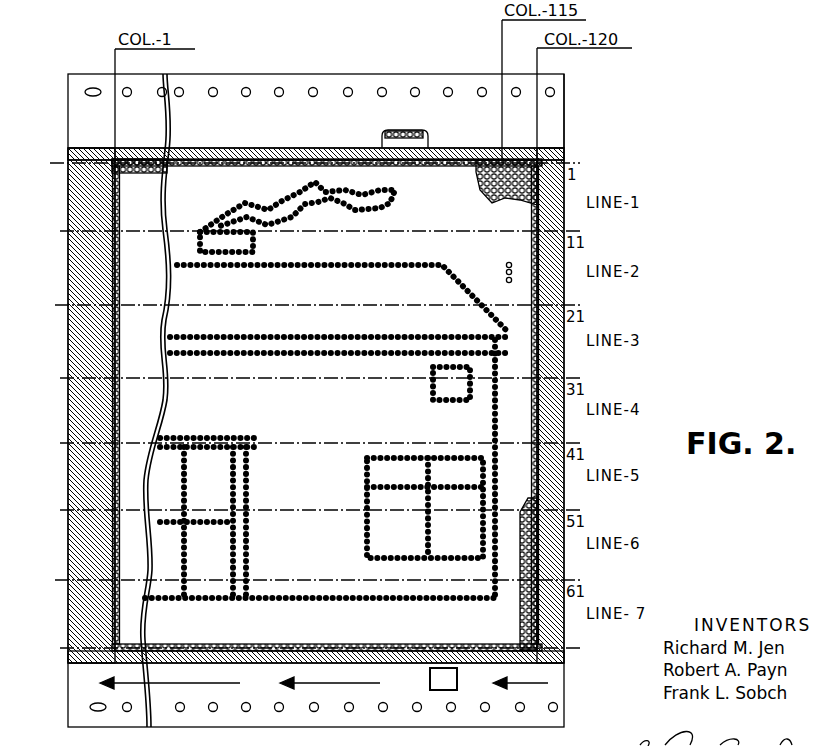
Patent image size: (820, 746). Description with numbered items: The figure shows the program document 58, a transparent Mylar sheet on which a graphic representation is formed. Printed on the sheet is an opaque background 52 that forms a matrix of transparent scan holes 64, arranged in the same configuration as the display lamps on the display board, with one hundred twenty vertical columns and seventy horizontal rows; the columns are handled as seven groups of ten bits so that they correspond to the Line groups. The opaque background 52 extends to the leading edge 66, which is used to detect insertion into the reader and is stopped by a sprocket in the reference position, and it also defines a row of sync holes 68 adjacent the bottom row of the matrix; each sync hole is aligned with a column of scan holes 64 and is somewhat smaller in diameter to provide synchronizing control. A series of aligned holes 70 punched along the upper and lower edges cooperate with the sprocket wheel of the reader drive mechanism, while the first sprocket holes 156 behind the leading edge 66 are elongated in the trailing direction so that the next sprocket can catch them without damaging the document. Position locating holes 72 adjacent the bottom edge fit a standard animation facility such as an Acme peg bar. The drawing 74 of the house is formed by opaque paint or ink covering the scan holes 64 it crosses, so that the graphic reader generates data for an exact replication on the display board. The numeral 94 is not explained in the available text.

The opaque background 52 is at (85, 272).
The program document 58 is at (578, 137).
The scan holes 64 is at (496, 200).
The leading edge 66 is at (67, 192).
The sync holes 68 is at (202, 133).
The aligned holes 70 is at (306, 100).
The position locating holes 72 is at (412, 131).
The drawing 74 is at (404, 265).
The display sheet 94 is at (715, 5).
The sprocket holes 156 is at (85, 92).